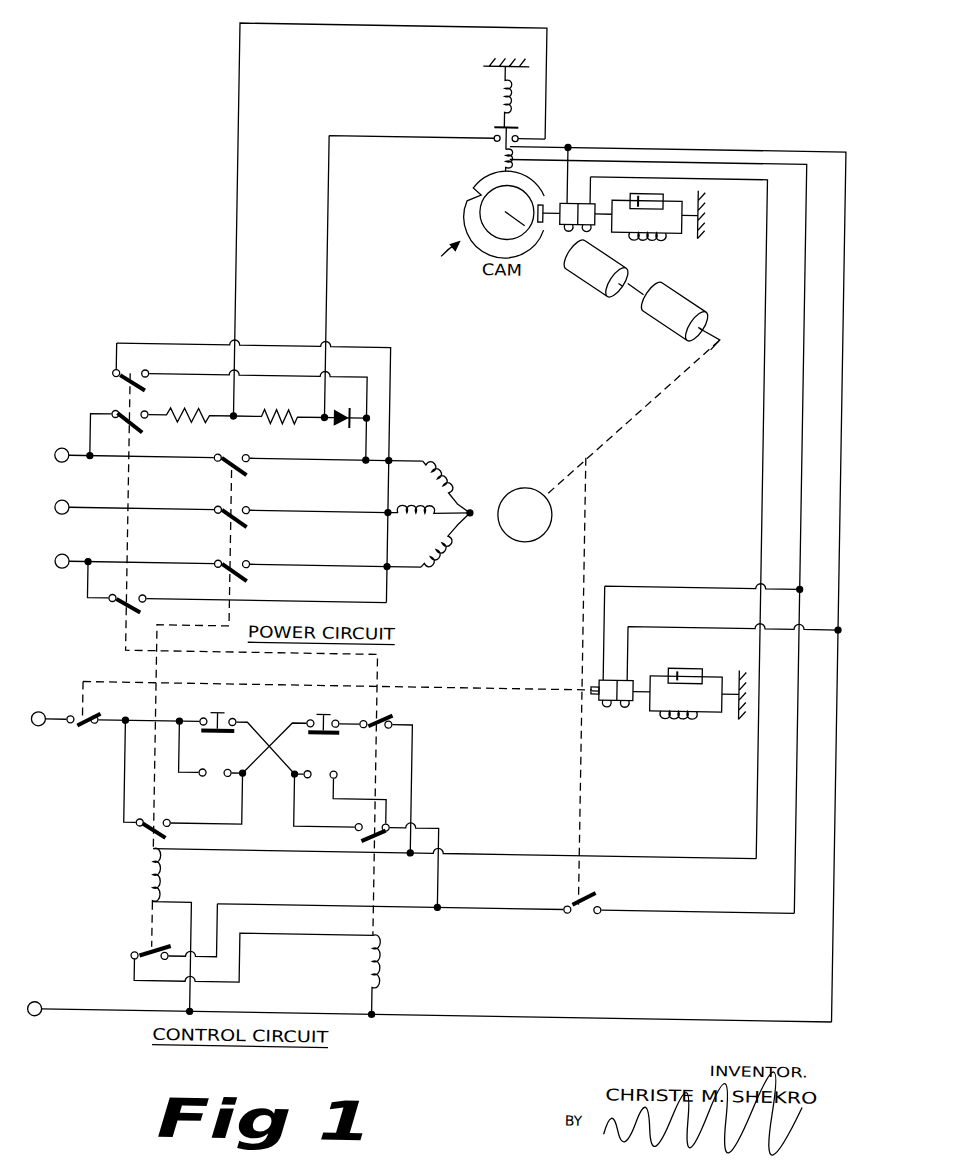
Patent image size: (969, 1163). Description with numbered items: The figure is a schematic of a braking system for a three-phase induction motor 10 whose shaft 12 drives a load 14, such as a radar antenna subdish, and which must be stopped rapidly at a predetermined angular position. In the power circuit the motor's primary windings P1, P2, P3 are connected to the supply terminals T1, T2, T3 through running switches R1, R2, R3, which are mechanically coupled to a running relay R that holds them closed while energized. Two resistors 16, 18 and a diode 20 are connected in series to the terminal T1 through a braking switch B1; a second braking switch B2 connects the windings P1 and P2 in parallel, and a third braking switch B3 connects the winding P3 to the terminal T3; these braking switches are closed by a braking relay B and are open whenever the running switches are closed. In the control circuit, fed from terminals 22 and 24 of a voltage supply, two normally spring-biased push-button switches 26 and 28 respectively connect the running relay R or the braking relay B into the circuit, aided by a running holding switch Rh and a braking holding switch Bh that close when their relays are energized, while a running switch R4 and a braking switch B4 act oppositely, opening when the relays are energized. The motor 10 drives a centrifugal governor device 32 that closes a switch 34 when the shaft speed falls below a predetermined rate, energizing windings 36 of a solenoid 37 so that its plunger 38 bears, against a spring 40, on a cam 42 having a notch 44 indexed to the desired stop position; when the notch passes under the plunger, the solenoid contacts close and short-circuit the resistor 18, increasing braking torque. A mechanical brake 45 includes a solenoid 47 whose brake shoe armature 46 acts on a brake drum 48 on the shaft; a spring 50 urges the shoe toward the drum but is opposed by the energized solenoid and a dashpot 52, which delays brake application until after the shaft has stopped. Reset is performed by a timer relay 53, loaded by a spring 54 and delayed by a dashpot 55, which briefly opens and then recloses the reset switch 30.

The 3-phase induction motor 10 is at (533, 483).
The shaft 12 is at (660, 410).
The load 14 is at (680, 287).
The resistor 16 is at (190, 419).
The resistor 18 is at (280, 419).
The diode 20 is at (360, 419).
The terminal 22 is at (56, 697).
The terminal 24 is at (54, 1007).
The push-button switch 26 is at (228, 733).
The push-button switch 28 is at (335, 733).
The reset switch 30 is at (95, 727).
The centrifugal governor device 32 is at (602, 287).
The switch 34 is at (589, 899).
The windings 36 is at (500, 142).
The solenoid 37 is at (488, 125).
The plunger 38 is at (504, 161).
The spring 40 is at (503, 91).
The cam 42 is at (486, 212).
The notch 44 is at (474, 189).
The mechanical brake 45 is at (609, 229).
The brake shoe armature 46 is at (543, 197).
The solenoid 47 is at (560, 227).
The brake drum 48 is at (438, 242).
The spring 50 is at (666, 234).
The dashpot 52 is at (637, 189).
The timer relay 53 is at (623, 704).
The spring 54 is at (702, 710).
The dashpot 55 is at (699, 662).
The terminal T1 is at (69, 450).
The terminal T2 is at (70, 503).
The terminal T3 is at (71, 557).
The running switch R1 is at (247, 474).
The running switch R2 is at (248, 526).
The running switch R3 is at (249, 578).
The running switch R4 is at (162, 944).
The braking switch B1 is at (129, 421).
The braking switch B2 is at (127, 382).
The braking switch B3 is at (129, 607).
The braking switch B4 is at (408, 705).
The primary winding P1 is at (444, 470).
The primary winding P2 is at (435, 520).
The primary winding P3 is at (446, 567).
The running relay R is at (164, 877).
The braking relay B is at (396, 960).
The running holding switch Rh is at (156, 832).
The braking holding switch Bh is at (372, 833).